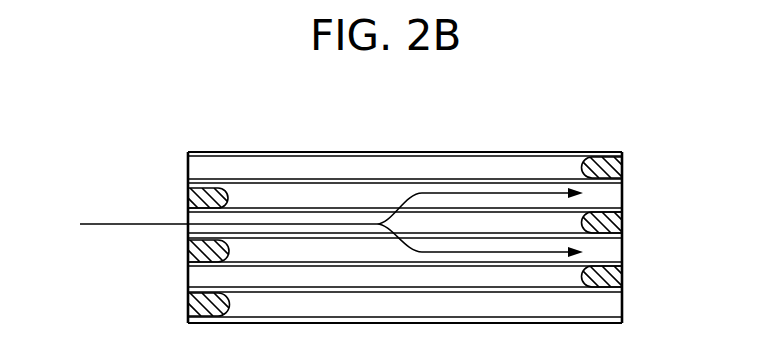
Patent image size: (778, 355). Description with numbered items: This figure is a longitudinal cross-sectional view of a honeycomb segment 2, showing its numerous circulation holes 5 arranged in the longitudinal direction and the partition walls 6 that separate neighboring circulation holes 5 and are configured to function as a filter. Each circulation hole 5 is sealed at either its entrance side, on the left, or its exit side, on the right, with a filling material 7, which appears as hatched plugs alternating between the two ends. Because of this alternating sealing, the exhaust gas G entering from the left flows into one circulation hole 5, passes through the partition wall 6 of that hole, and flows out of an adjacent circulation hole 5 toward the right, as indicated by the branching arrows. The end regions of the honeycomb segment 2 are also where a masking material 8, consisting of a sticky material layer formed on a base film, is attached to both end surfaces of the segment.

The honeycomb segment 2 is at (468, 143).
The circulation hole 5 is at (207, 170).
The partition wall 6 is at (299, 207).
The filling material 7 is at (190, 255).
The masking material 8 is at (188, 275).
The exhaust gas G is at (92, 223).